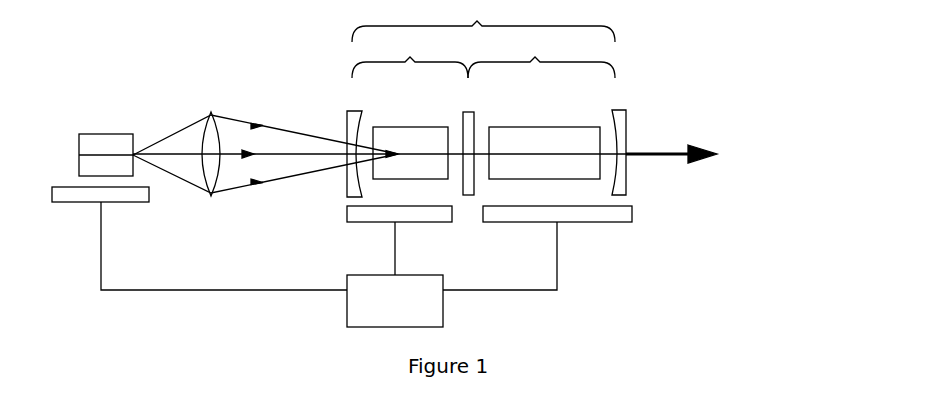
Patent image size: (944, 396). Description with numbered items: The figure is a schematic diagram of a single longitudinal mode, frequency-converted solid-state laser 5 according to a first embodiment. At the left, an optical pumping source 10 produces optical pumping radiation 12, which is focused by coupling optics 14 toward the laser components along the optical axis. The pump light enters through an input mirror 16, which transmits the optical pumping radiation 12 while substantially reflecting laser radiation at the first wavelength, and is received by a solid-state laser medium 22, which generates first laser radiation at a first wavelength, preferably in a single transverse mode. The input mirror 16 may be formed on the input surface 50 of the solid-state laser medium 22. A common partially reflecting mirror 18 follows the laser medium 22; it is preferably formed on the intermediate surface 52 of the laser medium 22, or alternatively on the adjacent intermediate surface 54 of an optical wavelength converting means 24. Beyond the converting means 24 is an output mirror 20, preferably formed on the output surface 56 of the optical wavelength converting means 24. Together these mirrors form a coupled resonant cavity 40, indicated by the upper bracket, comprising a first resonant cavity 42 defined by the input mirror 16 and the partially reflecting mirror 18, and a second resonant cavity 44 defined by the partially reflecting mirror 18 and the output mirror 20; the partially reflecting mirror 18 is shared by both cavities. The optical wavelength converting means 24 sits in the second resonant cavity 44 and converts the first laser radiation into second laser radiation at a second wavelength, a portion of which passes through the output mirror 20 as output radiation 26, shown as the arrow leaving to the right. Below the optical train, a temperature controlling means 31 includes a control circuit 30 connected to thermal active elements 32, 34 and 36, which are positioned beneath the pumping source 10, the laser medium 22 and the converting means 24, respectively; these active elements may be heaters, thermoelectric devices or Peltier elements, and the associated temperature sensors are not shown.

The single longitudinal mode frequency-converted solid-state laser 5 is at (712, 32).
The optical pumping source 10 is at (100, 134).
The optical pumping radiation 12 is at (182, 135).
The coupling optics 14 is at (211, 112).
The input mirror 16 is at (357, 138).
The common partially reflecting mirror 18 is at (469, 142).
The output mirror 20 is at (617, 142).
The solid-state laser medium 22 is at (412, 127).
The optical wavelength converting means 24 is at (548, 127).
The output radiation 26 is at (710, 160).
The control circuit 30 is at (395, 301).
The temperature controlling means 31 is at (478, 314).
The thermal active element 32 is at (73, 202).
The thermal active element 34 is at (373, 222).
The thermal active element 36 is at (589, 222).
The coupled resonant cavity 40 is at (483, 21).
The first resonant cavity 42 is at (410, 55).
The second resonant cavity 44 is at (541, 55).
The input surface 50 is at (372, 169).
The intermediate surface 52 is at (448, 158).
The intermediate surface 54 is at (489, 158).
The output surface 56 is at (600, 163).